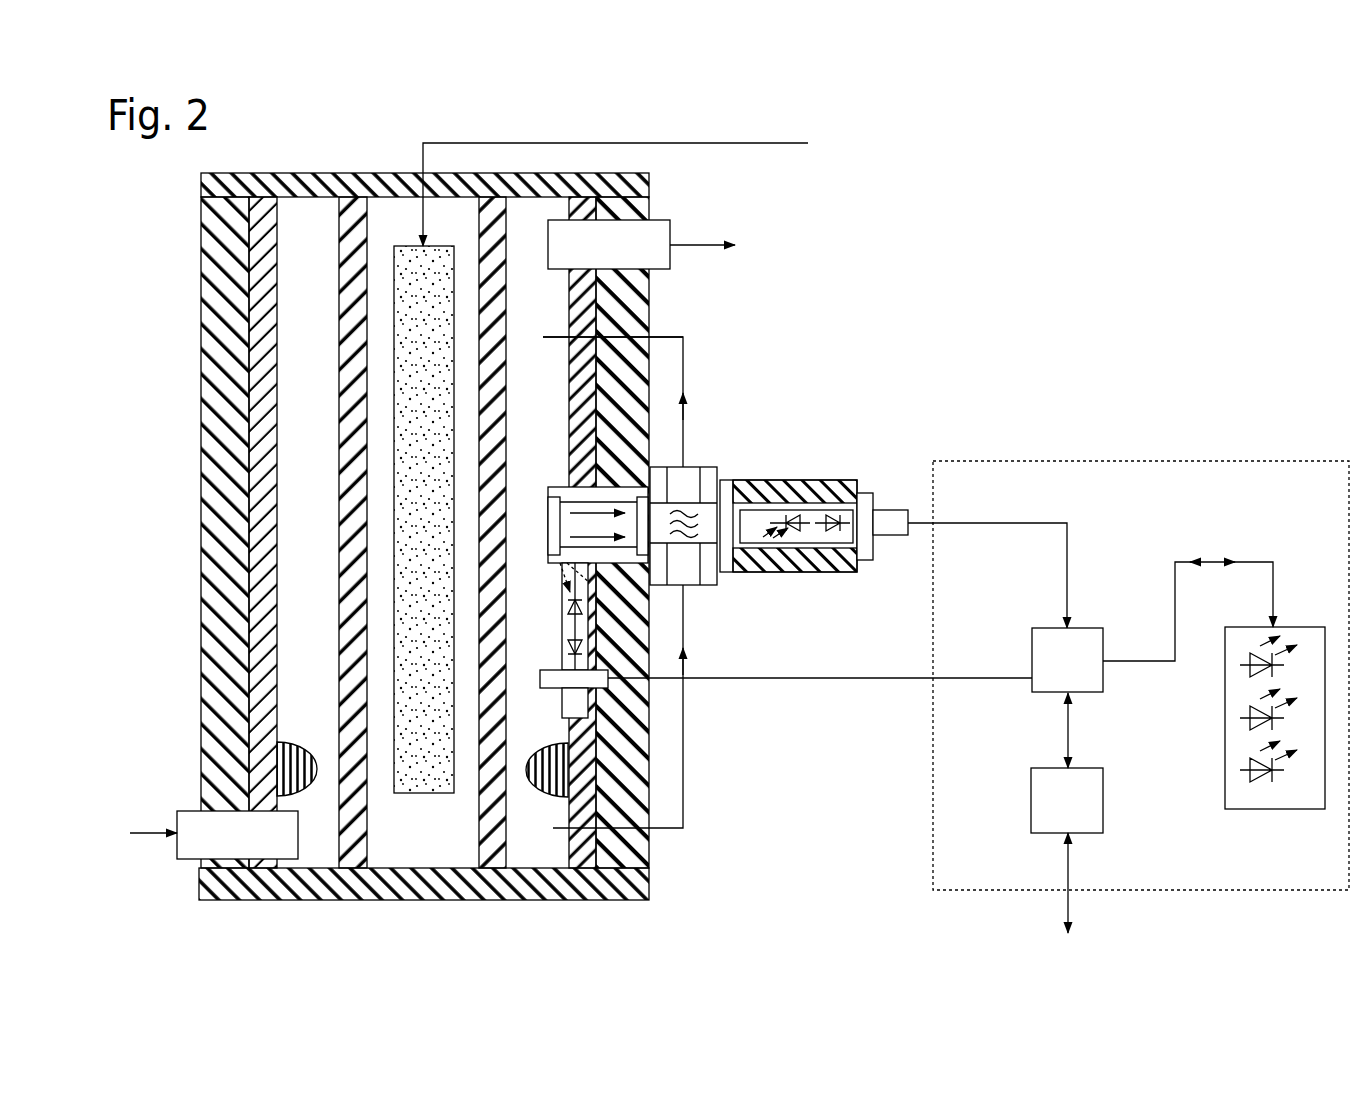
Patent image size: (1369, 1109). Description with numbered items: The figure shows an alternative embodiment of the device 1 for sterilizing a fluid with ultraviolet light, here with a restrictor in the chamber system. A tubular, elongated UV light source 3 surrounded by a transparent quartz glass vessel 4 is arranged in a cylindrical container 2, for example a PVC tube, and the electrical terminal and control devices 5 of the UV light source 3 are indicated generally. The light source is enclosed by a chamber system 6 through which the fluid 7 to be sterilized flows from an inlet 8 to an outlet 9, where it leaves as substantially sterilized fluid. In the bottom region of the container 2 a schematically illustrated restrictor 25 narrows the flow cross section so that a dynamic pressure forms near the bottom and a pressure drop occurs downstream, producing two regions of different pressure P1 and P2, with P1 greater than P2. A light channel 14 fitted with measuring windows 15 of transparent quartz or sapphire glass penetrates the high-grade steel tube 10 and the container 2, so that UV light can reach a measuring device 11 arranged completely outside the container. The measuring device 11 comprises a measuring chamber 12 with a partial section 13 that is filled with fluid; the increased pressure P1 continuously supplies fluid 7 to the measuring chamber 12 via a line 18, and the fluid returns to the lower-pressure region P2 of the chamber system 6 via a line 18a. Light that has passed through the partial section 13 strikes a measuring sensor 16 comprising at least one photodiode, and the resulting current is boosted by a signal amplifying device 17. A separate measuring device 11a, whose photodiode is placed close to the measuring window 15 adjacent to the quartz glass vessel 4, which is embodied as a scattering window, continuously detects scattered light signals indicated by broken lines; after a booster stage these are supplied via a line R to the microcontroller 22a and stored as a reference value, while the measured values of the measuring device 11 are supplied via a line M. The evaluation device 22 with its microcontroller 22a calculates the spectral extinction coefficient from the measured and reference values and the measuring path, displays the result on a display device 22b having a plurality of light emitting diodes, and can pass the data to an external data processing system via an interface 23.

The device 1 is at (178, 268).
The container 2 is at (210, 222).
The UV light source 3 is at (410, 413).
The quartz glass vessel 4 is at (348, 448).
The electrical terminal and control devices of the UV light source 5 is at (630, 186).
The chamber system 6 is at (318, 648).
The fluid 7 is at (307, 583).
The inlet 8 is at (190, 813).
The outlet 9 is at (658, 228).
The high-grade steel tube 10 is at (262, 647).
The measuring device 11 is at (792, 587).
The separate measuring device 11a is at (577, 707).
The measuring chamber 12 is at (692, 575).
The partial section 13 is at (692, 510).
The light channel 14 is at (575, 523).
The measuring windows 15 is at (637, 498).
The measuring sensor 16 is at (805, 522).
The signal amplifying device 17 is at (840, 520).
The line 18 is at (683, 800).
The line 18a is at (685, 352).
The evaluation device 22 is at (1035, 715).
The microcontroller 22a is at (1048, 628).
The display device 22b is at (1225, 703).
The interface 23 is at (1067, 813).
The restrictor 25 is at (312, 802).
The pressure P1 is at (338, 862).
The pressure P2 is at (328, 330).
The line M is at (994, 523).
The line R is at (830, 680).